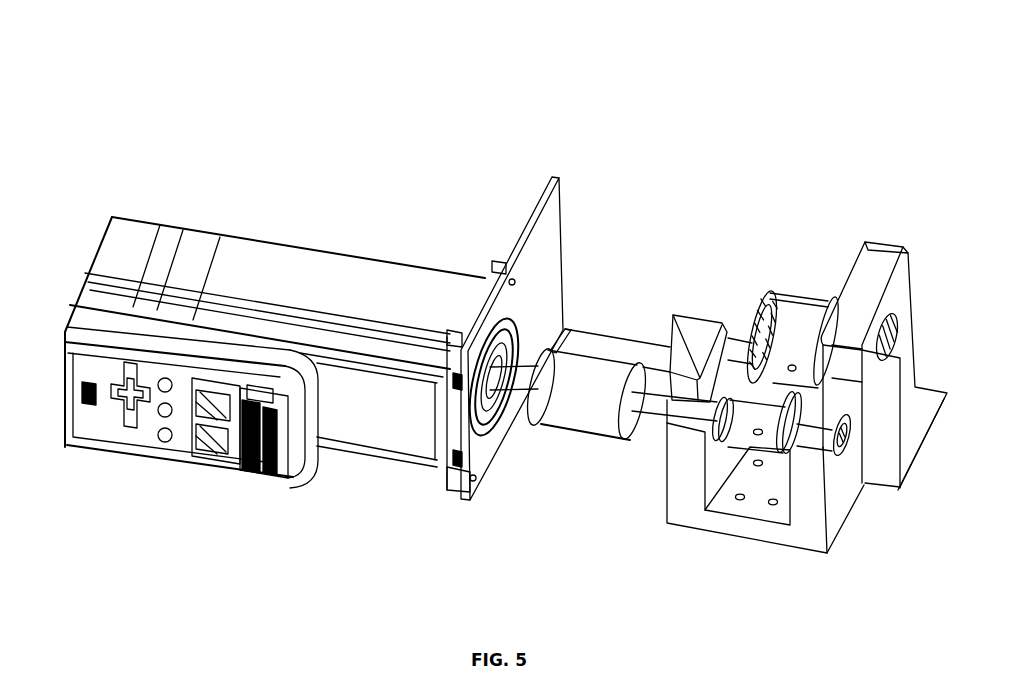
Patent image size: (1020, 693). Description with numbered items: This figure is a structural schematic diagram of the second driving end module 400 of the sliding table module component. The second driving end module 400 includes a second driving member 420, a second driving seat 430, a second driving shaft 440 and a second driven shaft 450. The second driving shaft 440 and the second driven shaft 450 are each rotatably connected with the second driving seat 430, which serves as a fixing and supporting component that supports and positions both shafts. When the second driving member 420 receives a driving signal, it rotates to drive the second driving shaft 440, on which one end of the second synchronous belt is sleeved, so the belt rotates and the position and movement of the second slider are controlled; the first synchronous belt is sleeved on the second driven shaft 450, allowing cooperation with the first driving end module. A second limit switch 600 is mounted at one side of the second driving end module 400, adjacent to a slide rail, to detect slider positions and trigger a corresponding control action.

The second driving end module 400 is at (505, 105).
The second driving member 420 is at (265, 285).
The second driving seat 430 is at (697, 497).
The second driving shaft 440 is at (758, 433).
The second driven shaft 450 is at (801, 300).
The second limit switch 600 is at (694, 353).